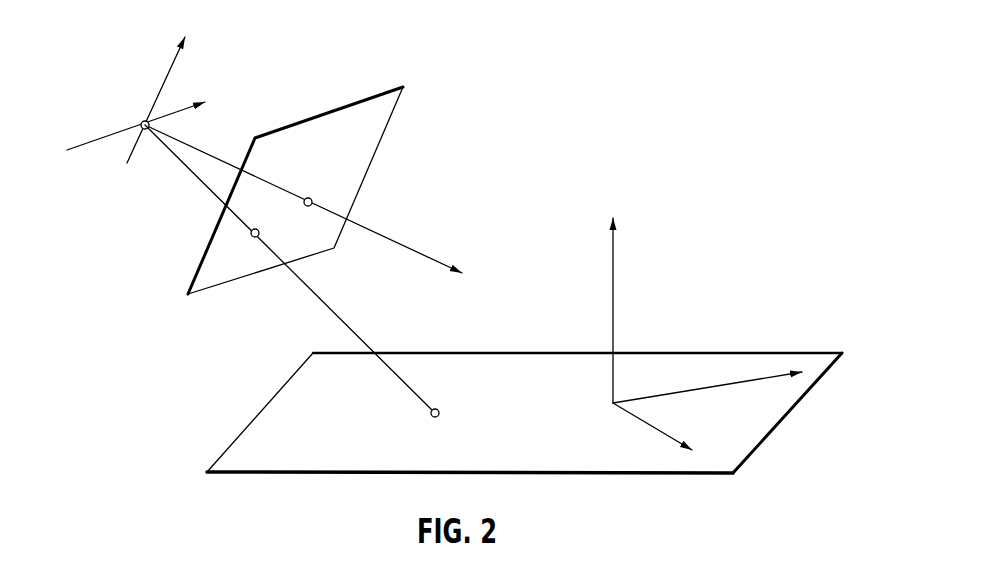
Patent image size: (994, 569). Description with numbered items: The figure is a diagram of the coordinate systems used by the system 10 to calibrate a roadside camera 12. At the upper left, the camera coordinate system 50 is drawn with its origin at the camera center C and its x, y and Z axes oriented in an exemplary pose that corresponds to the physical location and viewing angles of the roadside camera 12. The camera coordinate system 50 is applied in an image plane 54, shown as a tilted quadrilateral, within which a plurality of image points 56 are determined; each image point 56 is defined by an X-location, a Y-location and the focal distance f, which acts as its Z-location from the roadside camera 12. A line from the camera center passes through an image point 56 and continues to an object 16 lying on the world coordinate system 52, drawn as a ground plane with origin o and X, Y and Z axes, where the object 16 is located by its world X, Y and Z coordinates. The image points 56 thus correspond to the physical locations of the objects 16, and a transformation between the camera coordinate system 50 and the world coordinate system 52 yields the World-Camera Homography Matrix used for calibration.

The system 10 is at (822, 53).
The roadside camera 12 is at (137, 121).
The object 16 is at (439, 411).
The camera coordinate system 50 is at (213, 83).
The world coordinate system 52 is at (718, 352).
The image plane 54 is at (337, 108).
The image points 56 is at (255, 237).